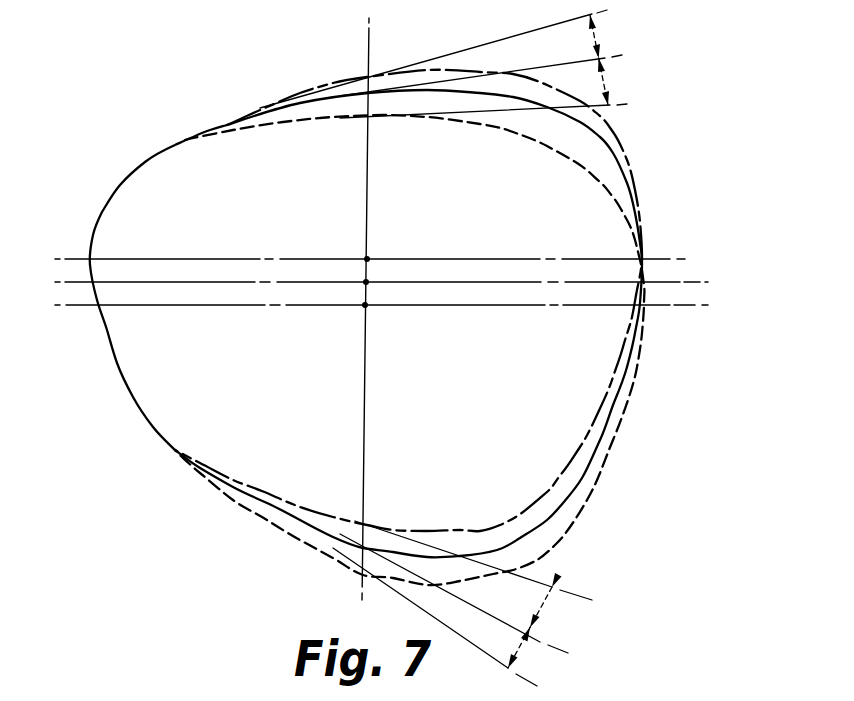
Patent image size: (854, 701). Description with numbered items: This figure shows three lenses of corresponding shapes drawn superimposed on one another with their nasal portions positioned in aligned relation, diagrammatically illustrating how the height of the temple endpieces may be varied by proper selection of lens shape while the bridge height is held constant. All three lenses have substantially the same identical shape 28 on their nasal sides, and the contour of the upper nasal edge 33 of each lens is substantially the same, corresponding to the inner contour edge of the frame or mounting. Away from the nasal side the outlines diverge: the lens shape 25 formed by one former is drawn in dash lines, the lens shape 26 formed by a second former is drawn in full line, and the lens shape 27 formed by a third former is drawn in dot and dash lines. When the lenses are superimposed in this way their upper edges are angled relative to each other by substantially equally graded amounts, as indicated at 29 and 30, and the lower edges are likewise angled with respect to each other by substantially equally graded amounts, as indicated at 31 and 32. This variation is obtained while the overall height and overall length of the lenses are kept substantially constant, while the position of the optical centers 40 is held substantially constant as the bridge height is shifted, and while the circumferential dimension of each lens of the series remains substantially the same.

The lens shape 25 is at (532, 553).
The lens shape 26 is at (533, 527).
The lens shape 27 is at (538, 497).
The shape on the nasal sides 28 is at (100, 355).
The angle between upper edges 29 is at (597, 37).
The angle between upper edges 30 is at (604, 80).
The angle between lower edges 31 is at (545, 612).
The angle between lower edges 32 is at (525, 650).
The upper nasal edge 33 is at (102, 212).
The optical centers 40 is at (367, 259).